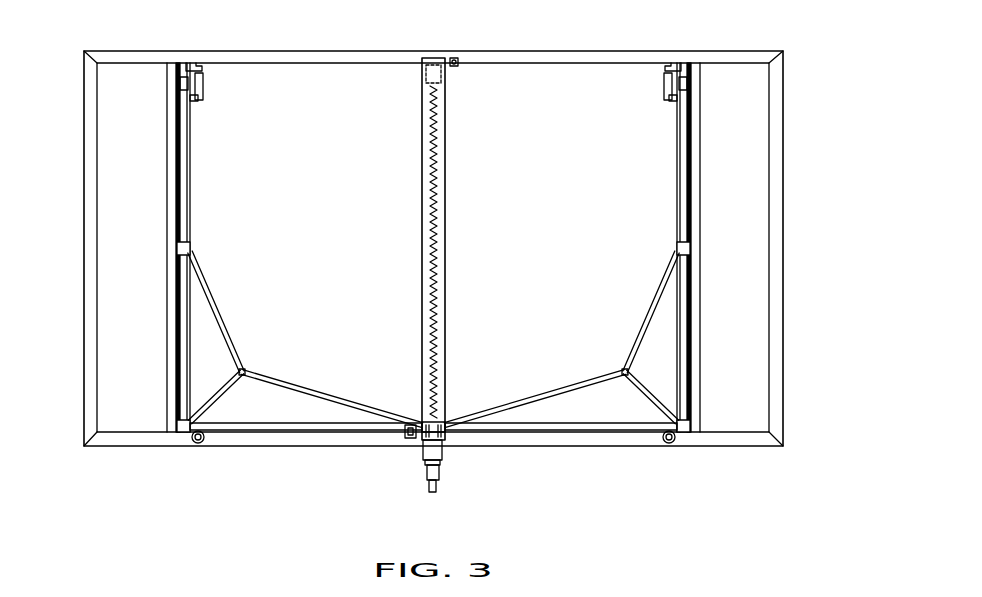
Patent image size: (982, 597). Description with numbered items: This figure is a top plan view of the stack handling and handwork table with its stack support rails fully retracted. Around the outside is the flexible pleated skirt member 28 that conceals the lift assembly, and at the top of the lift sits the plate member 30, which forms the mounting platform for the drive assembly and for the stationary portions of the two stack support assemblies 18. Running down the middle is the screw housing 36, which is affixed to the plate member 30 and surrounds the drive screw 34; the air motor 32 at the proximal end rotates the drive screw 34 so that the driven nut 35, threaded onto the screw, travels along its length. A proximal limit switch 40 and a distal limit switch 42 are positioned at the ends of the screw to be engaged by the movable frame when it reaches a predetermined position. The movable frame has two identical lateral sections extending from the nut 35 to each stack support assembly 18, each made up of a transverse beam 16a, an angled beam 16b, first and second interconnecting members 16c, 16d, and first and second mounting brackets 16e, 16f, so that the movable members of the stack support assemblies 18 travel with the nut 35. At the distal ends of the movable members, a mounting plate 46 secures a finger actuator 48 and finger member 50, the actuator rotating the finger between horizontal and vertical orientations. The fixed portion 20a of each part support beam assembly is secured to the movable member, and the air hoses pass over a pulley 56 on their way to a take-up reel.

The skirt member 28 is at (90, 447).
The fixed portion 20a is at (167, 172).
The stack support assembly 18 is at (192, 228).
The second mounting bracket 16f is at (180, 248).
The first mounting bracket 16e is at (180, 425).
The angled beam 16b is at (222, 308).
The first interconnecting member 16c is at (302, 385).
The second interconnecting member 16d is at (216, 392).
The transverse beam 16a is at (268, 430).
The pulley 56 is at (195, 443).
The screw housing 36 is at (422, 200).
The drive screw 34 is at (433, 250).
The driven nut 35 is at (437, 424).
The air motor 32 is at (428, 477).
The proximal limit switch 40 is at (410, 440).
The distal limit switch 42 is at (455, 58).
The finger member 50 is at (200, 62).
The finger actuator 48 is at (213, 91).
The mounting plate 46 is at (198, 101).
The plate member 30 is at (530, 270).